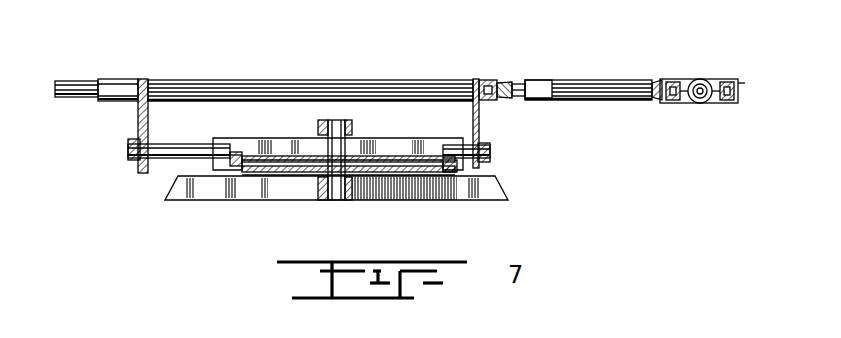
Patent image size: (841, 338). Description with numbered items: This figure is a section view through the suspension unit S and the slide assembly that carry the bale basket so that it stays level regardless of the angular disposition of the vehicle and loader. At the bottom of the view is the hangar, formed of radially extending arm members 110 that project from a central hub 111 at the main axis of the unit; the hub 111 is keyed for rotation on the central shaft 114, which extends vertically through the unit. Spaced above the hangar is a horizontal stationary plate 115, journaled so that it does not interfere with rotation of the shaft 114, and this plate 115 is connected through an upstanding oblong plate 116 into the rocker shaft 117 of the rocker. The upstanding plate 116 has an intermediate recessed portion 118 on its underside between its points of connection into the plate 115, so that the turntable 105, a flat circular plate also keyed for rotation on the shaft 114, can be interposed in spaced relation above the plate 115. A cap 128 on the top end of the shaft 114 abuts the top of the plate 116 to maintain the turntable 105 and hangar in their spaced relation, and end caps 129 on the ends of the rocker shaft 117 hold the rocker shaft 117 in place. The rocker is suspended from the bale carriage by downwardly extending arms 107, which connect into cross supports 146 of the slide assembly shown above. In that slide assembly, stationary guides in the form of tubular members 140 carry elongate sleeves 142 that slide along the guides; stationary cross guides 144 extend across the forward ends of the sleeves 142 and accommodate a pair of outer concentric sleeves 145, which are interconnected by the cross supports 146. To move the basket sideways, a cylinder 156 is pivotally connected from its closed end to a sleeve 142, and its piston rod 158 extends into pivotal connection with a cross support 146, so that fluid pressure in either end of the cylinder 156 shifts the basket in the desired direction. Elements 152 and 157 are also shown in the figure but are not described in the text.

The turntable 105 is at (400, 172).
The downwardly extending arms 107 is at (140, 111).
The arm members 110 is at (177, 185).
The central hub 111 is at (348, 200).
The central shaft 114 is at (336, 200).
The horizontal stationary plate 115 is at (452, 175).
The upstanding oblong plate 116 is at (252, 138).
The rocker shaft 117 is at (170, 143).
The intermediate recessed portion 118 is at (240, 162).
The cap 128 is at (352, 128).
The end caps 129 is at (128, 150).
The tubular members 140 is at (702, 103).
The elongate sleeves 142 is at (700, 80).
The stationary cross guides 144 is at (78, 92).
The outer concentric sleeves 145 is at (215, 80).
The cross supports 146 is at (138, 80).
The shaft end 152 is at (745, 83).
The cylinder 156 is at (574, 84).
The wedge 157 is at (655, 84).
The piston rod 158 is at (510, 84).
The suspension unit S is at (572, 171).